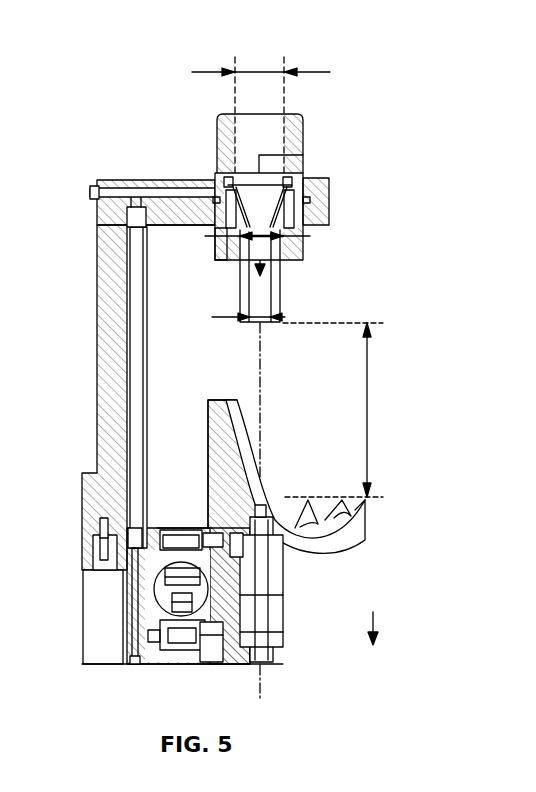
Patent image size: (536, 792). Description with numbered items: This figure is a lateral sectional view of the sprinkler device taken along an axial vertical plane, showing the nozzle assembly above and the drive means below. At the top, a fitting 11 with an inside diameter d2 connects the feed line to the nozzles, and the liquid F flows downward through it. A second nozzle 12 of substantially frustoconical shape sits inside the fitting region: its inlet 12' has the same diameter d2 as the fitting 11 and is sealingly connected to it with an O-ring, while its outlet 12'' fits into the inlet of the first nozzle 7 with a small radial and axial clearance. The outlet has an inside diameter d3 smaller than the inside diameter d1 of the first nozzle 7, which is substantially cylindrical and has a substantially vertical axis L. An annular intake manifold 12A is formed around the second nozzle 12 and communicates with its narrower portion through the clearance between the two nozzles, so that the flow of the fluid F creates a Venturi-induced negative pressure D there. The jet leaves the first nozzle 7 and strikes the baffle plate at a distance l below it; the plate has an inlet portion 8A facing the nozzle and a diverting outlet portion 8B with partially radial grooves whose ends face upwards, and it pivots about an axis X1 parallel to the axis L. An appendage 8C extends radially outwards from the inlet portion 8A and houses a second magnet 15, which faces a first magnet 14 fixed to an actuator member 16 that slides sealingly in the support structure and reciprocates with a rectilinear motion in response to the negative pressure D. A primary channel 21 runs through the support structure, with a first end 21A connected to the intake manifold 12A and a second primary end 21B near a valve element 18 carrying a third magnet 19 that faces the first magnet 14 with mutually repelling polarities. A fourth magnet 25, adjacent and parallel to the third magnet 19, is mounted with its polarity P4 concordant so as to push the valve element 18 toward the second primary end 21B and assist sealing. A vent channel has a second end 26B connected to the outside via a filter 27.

The first nozzle 7 is at (243, 287).
The inlet portion 8A is at (243, 412).
The diverting outlet portion 8B is at (357, 525).
The appendage 8C is at (155, 527).
The fitting 11 is at (292, 135).
The second nozzle 12 is at (297, 216).
The inlet 12' is at (325, 194).
The outlet 12'' is at (304, 218).
The annular intake manifold 12A is at (227, 230).
The first magnet 14 is at (170, 580).
The second magnet 15 is at (188, 530).
The actuator member 16 is at (283, 575).
The valve element 18 is at (203, 665).
The third magnet 19 is at (150, 637).
The primary channel 21 is at (135, 368).
The first end of primary channel 21A is at (177, 190).
The second primary end 21B is at (140, 664).
The fourth magnet 25 is at (240, 632).
The second end of vent channel 26B is at (103, 520).
The filter 27 is at (102, 550).
The Venturi-induced negative pressure D is at (133, 289).
The jet of liquid F is at (302, 150).
The longitudinal axis L is at (261, 340).
The distance l is at (368, 410).
The inside diameter of first nozzle d1 is at (262, 318).
The inside diameter of fitting d2 is at (258, 70).
The inside diameter of second nozzle outlet d3 is at (300, 250).
The polarity of fourth magnet P4 is at (373, 620).
The pivot axis X1 is at (261, 692).